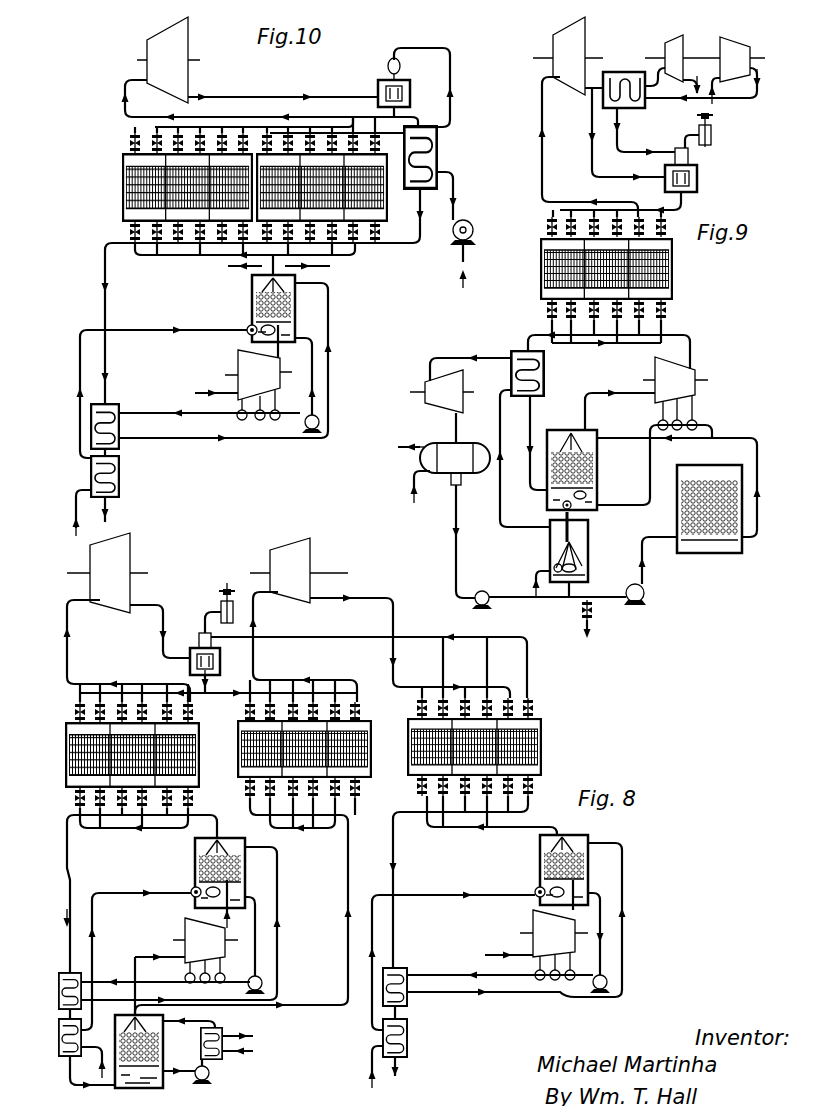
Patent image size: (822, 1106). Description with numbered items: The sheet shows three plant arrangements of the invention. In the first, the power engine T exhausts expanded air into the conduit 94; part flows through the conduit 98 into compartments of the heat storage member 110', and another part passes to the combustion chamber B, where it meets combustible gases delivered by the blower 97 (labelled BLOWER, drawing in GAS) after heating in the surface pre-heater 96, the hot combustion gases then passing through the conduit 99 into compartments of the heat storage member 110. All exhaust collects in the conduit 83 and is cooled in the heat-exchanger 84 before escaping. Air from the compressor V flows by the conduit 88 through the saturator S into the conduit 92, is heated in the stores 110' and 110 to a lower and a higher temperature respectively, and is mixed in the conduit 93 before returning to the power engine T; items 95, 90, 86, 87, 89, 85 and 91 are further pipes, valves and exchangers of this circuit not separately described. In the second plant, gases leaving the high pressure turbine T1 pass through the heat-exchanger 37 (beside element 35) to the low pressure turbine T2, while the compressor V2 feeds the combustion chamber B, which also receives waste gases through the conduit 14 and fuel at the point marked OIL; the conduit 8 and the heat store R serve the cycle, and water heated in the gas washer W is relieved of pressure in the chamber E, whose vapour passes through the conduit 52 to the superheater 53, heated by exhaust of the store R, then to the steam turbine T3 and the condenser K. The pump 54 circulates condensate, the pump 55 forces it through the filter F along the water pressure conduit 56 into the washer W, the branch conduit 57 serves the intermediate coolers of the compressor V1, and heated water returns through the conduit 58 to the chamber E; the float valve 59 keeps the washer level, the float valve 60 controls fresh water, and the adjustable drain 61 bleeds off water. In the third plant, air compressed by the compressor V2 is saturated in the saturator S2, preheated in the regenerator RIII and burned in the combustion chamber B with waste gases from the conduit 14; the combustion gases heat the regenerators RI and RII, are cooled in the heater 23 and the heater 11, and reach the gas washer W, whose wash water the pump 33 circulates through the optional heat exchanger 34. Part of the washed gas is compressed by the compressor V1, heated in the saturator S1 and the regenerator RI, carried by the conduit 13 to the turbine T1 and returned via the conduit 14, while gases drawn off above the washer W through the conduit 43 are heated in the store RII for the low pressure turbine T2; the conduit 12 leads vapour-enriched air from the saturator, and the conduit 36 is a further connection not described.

In FIG. 10, the power engine T is at (168, 60).
In FIG. 10, the heat storage member 110' is at (169, 187).
In FIG. 10, the heat storage member 110 is at (341, 190).
In FIG. 10, the conduit 94 is at (261, 97).
In FIG. 10, the conduit 98 is at (243, 107).
In FIG. 10, the conduit 93 is at (270, 102).
In FIG. 10, the combustion chamber B is at (380, 86).
In FIG. 9, the combustion chamber B is at (698, 179).
In FIG. 8, the combustion chamber B is at (220, 664).
In FIG. 10, the pipe loop 95 is at (411, 103).
In FIG. 10, the conduit 99 is at (413, 117).
In FIG. 10, the surface pre-heater 96 is at (440, 150).
In FIG. 10, the blower 97 is at (473, 229).
In FIG. 10, the blower BLOWER is at (466, 220).
In FIG. 10, the gas inlet GAS is at (468, 252).
In FIG. 10, the conduit 83 is at (263, 296).
In FIG. 10, the conduit 92 is at (262, 270).
In FIG. 10, the pipe 90 is at (130, 330).
In FIG. 10, the pipe loop 86 is at (330, 328).
In FIG. 10, the conduit 88 is at (280, 353).
In FIG. 10, the heat-exchanger 84 is at (121, 448).
In FIG. 10, the heat exchanger 91 is at (121, 487).
In FIG. 10, the saturator S is at (252, 294).
In FIG. 10, the separator filling 87 is at (256, 316).
In FIG. 10, the valve 89 is at (247, 333).
In FIG. 10, the compressor V is at (258, 385).
In FIG. 10, the pump 85 is at (321, 422).
In FIG. 9, the high pressure turbine T1 is at (568, 56).
In FIG. 8, the high pressure turbine T1 is at (107, 573).
In FIG. 9, the heat exchanger 35 is at (603, 80).
In FIG. 9, the heat-exchanger 37 is at (626, 72).
In FIG. 9, the low pressure turbine T2 is at (675, 58).
In FIG. 8, the low pressure turbine T2 is at (299, 570).
In FIG. 9, the compressor V2 is at (735, 59).
In FIG. 8, the compressor V2 is at (554, 945).
In FIG. 9, the conduit 14 is at (590, 131).
In FIG. 8, the conduit 14 is at (167, 620).
In FIG. 9, the oil inlet valve OIL is at (683, 130).
In FIG. 8, the oil inlet valve OIL is at (212, 602).
In FIG. 9, the heat store R is at (674, 266).
In FIG. 9, the conduit 8 is at (692, 346).
In FIG. 9, the superheater 53 is at (546, 370).
In FIG. 9, the low pressure steam turbine T3 is at (442, 391).
In FIG. 9, the condenser K is at (444, 473).
In FIG. 9, the pump 54 is at (480, 590).
In FIG. 9, the conduit 52 is at (503, 505).
In FIG. 9, the gas washer W is at (597, 462).
In FIG. 8, the gas washer W is at (163, 1050).
In FIG. 9, the conduit 58 is at (600, 458).
In FIG. 9, the float valve 59 is at (592, 498).
In FIG. 9, the compressor V1 is at (675, 393).
In FIG. 8, the compressor V1 is at (205, 950).
In FIG. 9, the branch conduit 57 is at (704, 422).
In FIG. 9, the water pressure conduit 56 is at (733, 438).
In FIG. 9, the filter F is at (677, 512).
In FIG. 9, the pump 55 is at (645, 593).
In FIG. 9, the pressure relieving chamber E is at (589, 540).
In FIG. 9, the float valve 60 is at (550, 566).
In FIG. 9, the adjustable drain 61 is at (583, 612).
In FIG. 8, the conduit 13 is at (127, 651).
In FIG. 8, the pipe 36 is at (391, 598).
In FIG. 8, the regenerator RI is at (200, 758).
In FIG. 8, the multiple-element heat store RII is at (370, 758).
In FIG. 8, the regenerator RIII is at (542, 750).
In FIG. 8, the conduit 12 is at (201, 831).
In FIG. 8, the conduit 43 is at (304, 1004).
In FIG. 8, the saturator S1 is at (195, 872).
In FIG. 8, the saturator S2 is at (540, 868).
In FIG. 8, the heater 23 is at (58, 986).
In FIG. 8, the heater 11 is at (58, 1046).
In FIG. 8, the heat exchanger 34 is at (222, 1031).
In FIG. 8, the pump 33 is at (210, 1074).